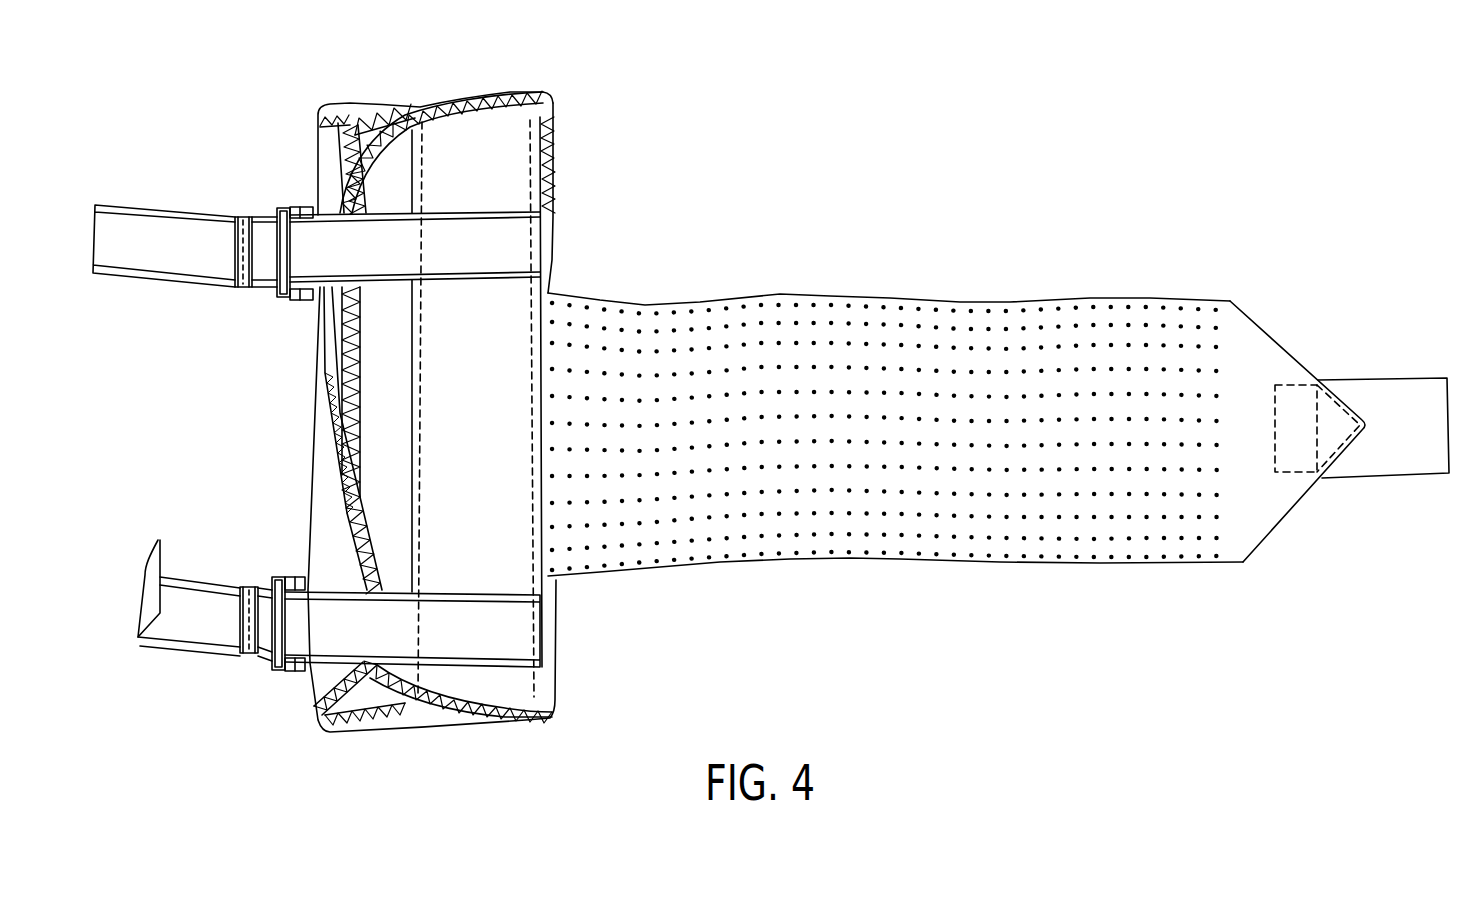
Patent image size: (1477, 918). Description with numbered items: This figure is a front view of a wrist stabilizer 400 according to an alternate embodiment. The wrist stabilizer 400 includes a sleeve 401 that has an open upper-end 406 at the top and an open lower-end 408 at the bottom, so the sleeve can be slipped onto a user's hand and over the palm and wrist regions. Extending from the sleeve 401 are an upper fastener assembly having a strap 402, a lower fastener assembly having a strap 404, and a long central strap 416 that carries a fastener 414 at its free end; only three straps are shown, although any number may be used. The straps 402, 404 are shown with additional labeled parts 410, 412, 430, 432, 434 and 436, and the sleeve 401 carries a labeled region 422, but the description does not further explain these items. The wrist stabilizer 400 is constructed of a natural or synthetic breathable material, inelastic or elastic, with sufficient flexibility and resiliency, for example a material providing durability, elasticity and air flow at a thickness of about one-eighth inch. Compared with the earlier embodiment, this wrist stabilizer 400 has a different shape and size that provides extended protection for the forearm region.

The wrist stabilizer 400 is at (856, 128).
The sleeve 401 is at (298, 422).
The strap 402 is at (207, 287).
The strap 404 is at (192, 656).
The open upper-end 406 is at (423, 106).
The open lower-end 408 is at (448, 728).
The upper strap slider 410 is at (250, 217).
The lower strap slider 412 is at (248, 654).
The fastener 414 is at (1367, 378).
The central strap 416 is at (1095, 297).
The fastening surface 422 is at (513, 318).
The upper buckle 430 is at (283, 300).
The lower buckle 432 is at (280, 577).
The upper strap free end 434 is at (120, 207).
The lower strap free end 436 is at (160, 540).